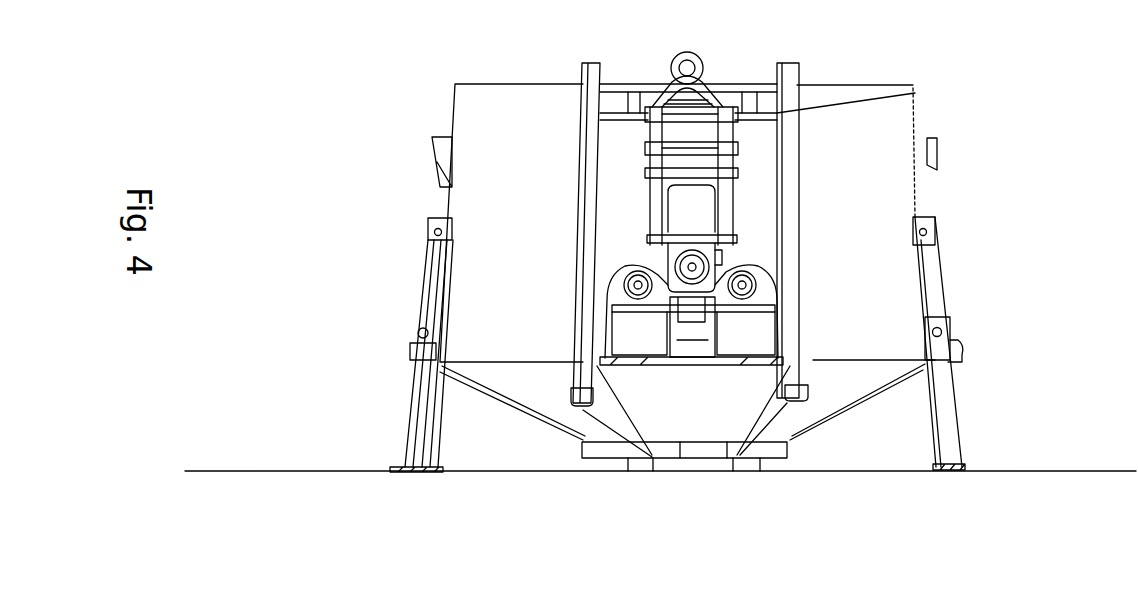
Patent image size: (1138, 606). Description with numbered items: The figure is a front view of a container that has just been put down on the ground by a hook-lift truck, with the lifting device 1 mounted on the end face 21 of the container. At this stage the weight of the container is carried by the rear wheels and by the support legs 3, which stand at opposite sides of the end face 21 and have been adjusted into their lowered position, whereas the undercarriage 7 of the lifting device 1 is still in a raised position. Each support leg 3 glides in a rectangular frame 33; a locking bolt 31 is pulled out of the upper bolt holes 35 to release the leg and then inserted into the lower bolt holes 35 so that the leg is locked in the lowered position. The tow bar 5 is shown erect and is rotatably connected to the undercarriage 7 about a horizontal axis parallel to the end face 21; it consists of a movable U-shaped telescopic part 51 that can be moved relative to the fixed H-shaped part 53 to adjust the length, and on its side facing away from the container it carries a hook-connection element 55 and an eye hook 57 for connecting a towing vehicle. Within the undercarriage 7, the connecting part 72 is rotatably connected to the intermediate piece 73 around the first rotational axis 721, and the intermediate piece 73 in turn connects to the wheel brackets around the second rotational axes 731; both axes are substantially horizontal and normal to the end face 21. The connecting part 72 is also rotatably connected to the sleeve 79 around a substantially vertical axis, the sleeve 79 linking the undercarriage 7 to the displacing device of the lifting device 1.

The lifting device 1 is at (607, 247).
The support legs 3 is at (408, 400).
The tow bar 5 is at (612, 178).
The undercarriage 7 is at (690, 378).
The end face 21 is at (540, 155).
The locking bolts 31 is at (420, 331).
The rectangular frame 33 is at (422, 267).
The bolt holes 35 is at (432, 232).
The telescopic part 51 is at (913, 96).
The fixed part 53 is at (738, 165).
The hook-connection element 55 is at (705, 93).
The eye hook 57 is at (682, 53).
The connecting part 72 is at (737, 243).
The first rotational axis 721 is at (698, 267).
The intermediate piece 73 is at (750, 283).
The second rotational axes 731 is at (778, 296).
The sleeve 79 is at (735, 187).